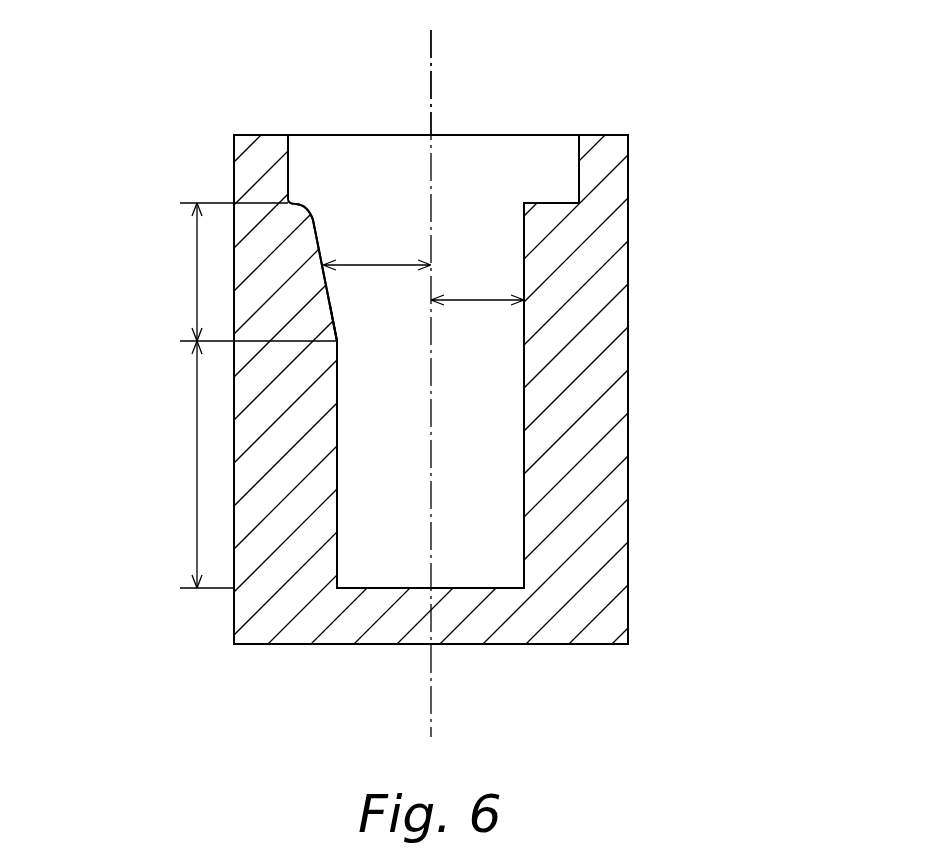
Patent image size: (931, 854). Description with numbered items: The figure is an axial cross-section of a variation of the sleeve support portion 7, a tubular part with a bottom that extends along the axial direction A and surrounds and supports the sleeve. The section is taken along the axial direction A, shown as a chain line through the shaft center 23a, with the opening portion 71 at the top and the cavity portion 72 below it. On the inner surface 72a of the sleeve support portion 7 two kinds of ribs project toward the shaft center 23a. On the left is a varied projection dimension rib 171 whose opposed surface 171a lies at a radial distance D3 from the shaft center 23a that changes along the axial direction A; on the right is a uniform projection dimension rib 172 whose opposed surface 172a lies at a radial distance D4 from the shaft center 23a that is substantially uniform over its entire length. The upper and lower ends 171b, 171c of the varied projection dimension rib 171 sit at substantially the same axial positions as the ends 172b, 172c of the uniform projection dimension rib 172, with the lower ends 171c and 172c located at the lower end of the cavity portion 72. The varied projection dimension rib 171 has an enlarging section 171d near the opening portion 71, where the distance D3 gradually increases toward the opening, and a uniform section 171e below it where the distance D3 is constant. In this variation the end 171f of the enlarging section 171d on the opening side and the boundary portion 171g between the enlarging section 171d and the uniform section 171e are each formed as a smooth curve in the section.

The sleeve support portion 7 is at (148, 77).
The opening portion 71 is at (570, 135).
The cavity portion 72 is at (360, 135).
The inner surface 72a is at (405, 135).
The shaft center 23a is at (432, 73).
The varied projection dimension rib 171 is at (338, 512).
The opposed surface 171a is at (337, 452).
The end 171b is at (291, 135).
The end 171c is at (337, 586).
The enlarging section 171d is at (197, 243).
The uniform section 171e is at (197, 463).
The end 171f is at (332, 135).
The boundary portion 171g is at (337, 341).
The uniform projection dimension rib 172 is at (523, 518).
The opposed surface 172a is at (524, 455).
The end 172b is at (518, 135).
The end 172c is at (524, 586).
The radial distance D3 is at (392, 268).
The radial distance D4 is at (484, 303).
The axial direction A is at (431, 706).